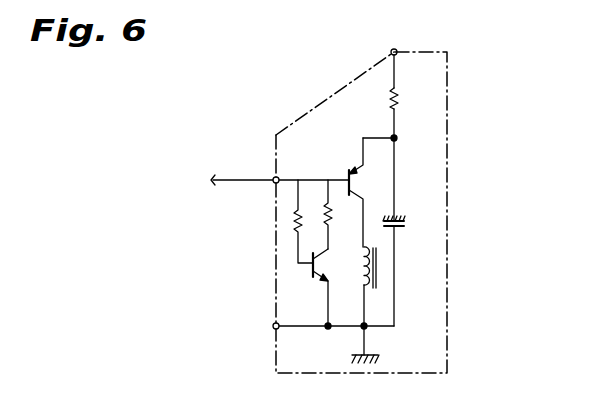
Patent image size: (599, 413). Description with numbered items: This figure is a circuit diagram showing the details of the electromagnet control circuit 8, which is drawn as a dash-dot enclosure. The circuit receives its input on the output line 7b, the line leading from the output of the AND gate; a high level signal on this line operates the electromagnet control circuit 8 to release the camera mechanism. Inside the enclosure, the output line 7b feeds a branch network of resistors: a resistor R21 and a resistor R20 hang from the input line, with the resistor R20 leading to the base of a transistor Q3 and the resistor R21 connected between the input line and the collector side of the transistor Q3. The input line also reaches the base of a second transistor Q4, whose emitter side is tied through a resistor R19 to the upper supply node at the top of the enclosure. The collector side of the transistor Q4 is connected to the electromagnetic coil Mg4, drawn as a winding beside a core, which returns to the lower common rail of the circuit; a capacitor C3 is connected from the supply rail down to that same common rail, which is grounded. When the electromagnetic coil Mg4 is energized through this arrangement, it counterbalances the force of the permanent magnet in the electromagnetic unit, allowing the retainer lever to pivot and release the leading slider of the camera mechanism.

The output line 7b is at (242, 179).
The electromagnet control circuit 8 is at (447, 143).
The resistor R19 is at (369, 105).
The resistor R20 is at (297, 226).
The resistor R21 is at (318, 211).
The transistor Q3 is at (332, 287).
The transistor Q4 is at (370, 192).
The capacitor C3 is at (411, 225).
The electromagnetic coil Mg4 is at (376, 288).